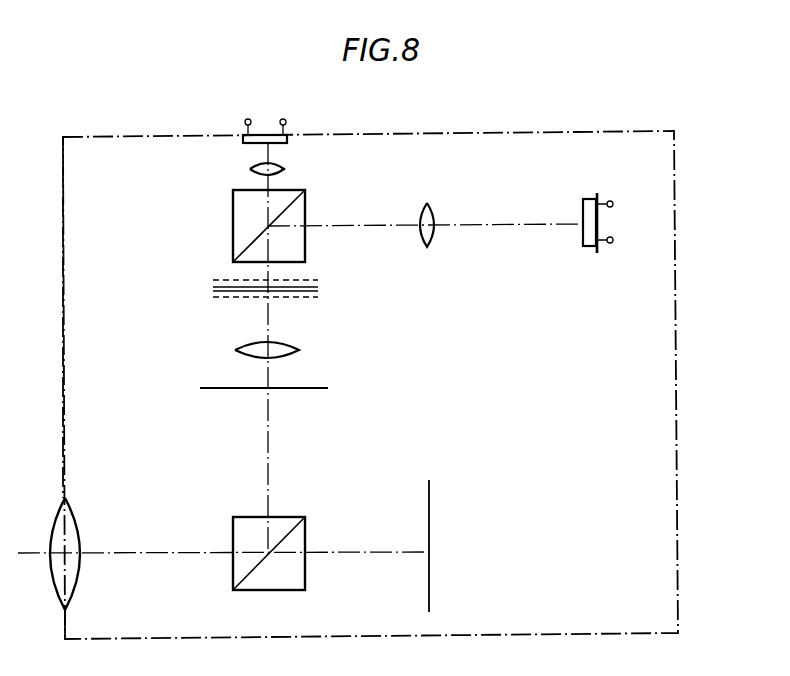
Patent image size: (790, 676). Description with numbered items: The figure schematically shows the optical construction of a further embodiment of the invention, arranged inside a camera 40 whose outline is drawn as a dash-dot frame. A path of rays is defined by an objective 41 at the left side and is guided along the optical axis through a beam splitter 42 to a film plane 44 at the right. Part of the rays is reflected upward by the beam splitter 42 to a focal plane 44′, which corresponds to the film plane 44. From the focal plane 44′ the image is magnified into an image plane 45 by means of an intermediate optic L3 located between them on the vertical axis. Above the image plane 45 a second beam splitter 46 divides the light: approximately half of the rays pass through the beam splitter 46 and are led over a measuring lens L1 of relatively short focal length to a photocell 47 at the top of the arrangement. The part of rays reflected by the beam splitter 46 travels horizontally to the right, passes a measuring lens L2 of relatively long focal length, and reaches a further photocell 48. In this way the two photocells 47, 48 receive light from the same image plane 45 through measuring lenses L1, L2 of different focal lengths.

The camera 40 is at (679, 392).
The objective 41 is at (62, 522).
The beam splitter 42 is at (241, 530).
The film plane 44 is at (432, 512).
The focal plane 44′ is at (334, 387).
The image plane 45 is at (320, 289).
The beam splitter 46 is at (241, 213).
The photocell 47 is at (284, 138).
The further photocell 48 is at (584, 211).
The measuring lens L1 is at (285, 170).
The measuring lens L2 is at (426, 204).
The intermediate optic L3 is at (298, 349).